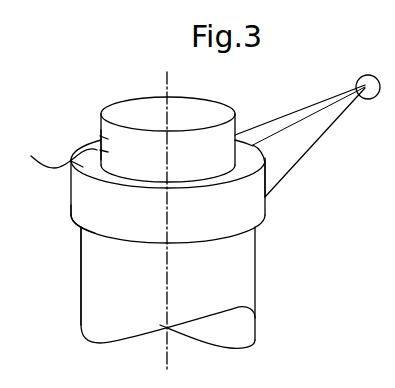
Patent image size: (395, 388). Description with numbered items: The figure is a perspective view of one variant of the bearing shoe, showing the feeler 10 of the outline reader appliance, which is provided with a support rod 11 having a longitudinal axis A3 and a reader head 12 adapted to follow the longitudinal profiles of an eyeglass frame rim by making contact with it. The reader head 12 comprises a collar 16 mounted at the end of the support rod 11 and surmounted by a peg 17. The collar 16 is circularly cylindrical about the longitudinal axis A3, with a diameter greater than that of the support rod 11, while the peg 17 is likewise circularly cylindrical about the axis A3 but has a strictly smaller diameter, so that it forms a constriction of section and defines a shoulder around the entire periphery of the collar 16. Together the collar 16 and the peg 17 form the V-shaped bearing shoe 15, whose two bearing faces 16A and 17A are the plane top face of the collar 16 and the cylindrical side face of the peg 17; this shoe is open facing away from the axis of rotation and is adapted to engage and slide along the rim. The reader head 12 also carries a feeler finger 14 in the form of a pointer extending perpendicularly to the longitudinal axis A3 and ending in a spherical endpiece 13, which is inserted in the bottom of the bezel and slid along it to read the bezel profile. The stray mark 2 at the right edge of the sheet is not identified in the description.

The feeler 10 is at (104, 98).
The support rod 11 is at (250, 290).
The reader head 12 is at (275, 211).
The spherical endpiece 13 is at (365, 76).
The feeler finger 14 is at (300, 116).
The V-shaped bearing shoe 15 is at (100, 147).
The collar 16 is at (118, 228).
The bearing face 16A is at (83, 187).
The peg 17 is at (135, 106).
The bearing face 17A is at (101, 137).
The longitudinal axis A3 is at (167, 363).
The partial numeral 2 is at (390, 219).